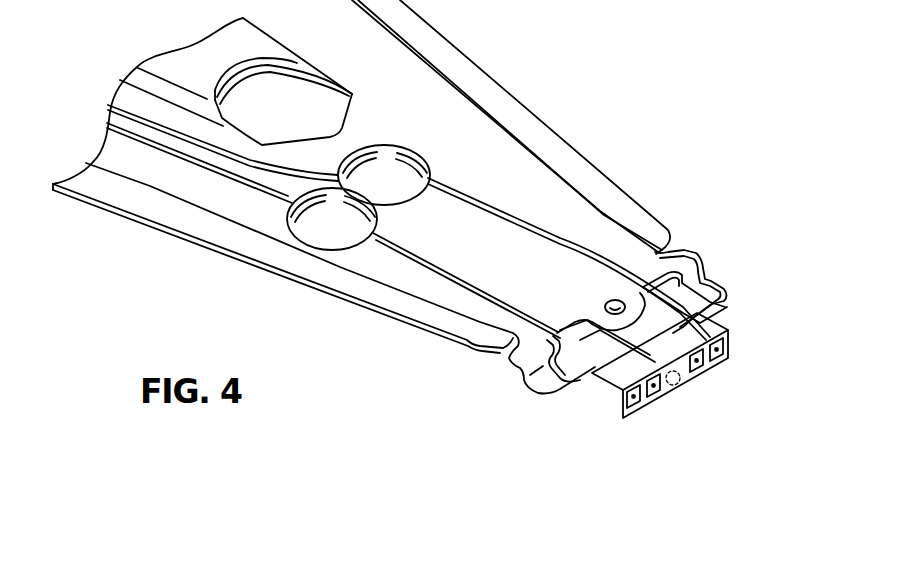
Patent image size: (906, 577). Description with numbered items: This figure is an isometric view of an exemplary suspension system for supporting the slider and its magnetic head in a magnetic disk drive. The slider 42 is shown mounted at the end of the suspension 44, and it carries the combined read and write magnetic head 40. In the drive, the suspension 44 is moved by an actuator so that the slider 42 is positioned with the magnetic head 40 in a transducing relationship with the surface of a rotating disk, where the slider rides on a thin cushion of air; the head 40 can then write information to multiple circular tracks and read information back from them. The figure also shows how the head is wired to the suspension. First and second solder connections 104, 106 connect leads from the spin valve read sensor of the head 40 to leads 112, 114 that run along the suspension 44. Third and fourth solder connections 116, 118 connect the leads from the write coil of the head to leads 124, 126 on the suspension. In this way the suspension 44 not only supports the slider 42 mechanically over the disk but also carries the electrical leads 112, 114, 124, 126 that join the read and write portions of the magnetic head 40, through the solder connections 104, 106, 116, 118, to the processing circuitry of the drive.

The magnetic head 40 is at (686, 397).
The slider 42 is at (572, 405).
The suspension 44 is at (531, 106).
The first solder connection 104 is at (625, 412).
The second solder connection 106 is at (719, 349).
The lead 112 is at (400, 260).
The lead 114 is at (584, 247).
The third solder connection 116 is at (648, 403).
The fourth solder connection 118 is at (699, 362).
The lead 124 is at (450, 278).
The lead 126 is at (508, 208).